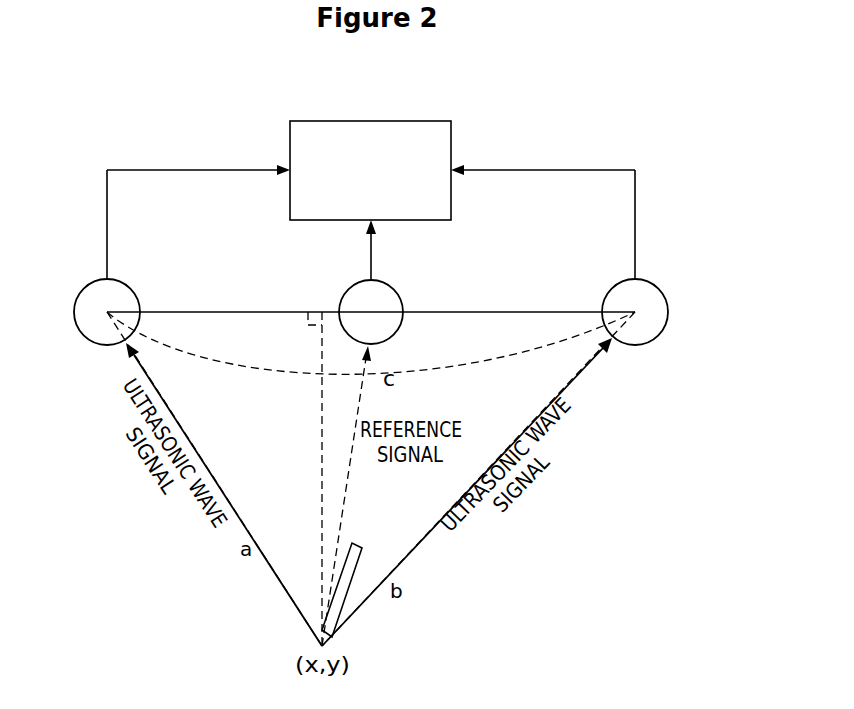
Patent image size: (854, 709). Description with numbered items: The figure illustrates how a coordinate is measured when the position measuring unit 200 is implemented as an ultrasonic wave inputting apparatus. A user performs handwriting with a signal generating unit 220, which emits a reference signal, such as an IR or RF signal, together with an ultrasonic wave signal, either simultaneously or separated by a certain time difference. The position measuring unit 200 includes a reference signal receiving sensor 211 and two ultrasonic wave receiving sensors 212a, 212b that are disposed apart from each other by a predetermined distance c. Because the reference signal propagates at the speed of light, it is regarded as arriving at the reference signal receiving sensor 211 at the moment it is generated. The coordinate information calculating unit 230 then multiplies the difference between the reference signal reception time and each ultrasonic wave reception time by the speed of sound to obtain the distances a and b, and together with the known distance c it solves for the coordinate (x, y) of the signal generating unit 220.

The position measuring unit 200 is at (295, 89).
The coordinate information calculating unit 230 is at (400, 121).
The ultrasonic wave receiving sensor 212a is at (125, 282).
The reference signal receiving sensor 211 is at (388, 282).
The ultrasonic wave receiving sensor 212b is at (652, 282).
The signal generating unit 220 is at (343, 587).